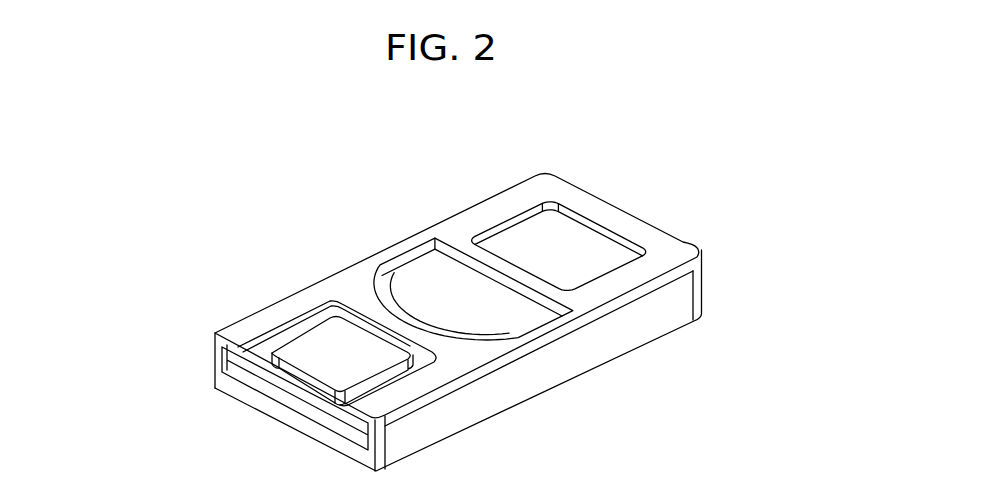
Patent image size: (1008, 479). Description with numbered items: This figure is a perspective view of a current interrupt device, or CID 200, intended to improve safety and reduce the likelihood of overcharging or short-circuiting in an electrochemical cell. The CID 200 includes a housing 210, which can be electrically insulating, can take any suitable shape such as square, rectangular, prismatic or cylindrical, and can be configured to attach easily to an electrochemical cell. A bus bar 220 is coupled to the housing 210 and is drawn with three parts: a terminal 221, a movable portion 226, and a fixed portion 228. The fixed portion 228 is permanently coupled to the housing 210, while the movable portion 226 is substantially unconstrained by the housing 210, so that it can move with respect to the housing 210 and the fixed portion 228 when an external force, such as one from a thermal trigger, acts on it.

The CID 200 is at (670, 150).
The housing 210 is at (651, 303).
The bus bar 220 is at (250, 369).
The terminal 221 is at (323, 356).
The movable portion 226 is at (413, 283).
The fixed portion 228 is at (578, 245).